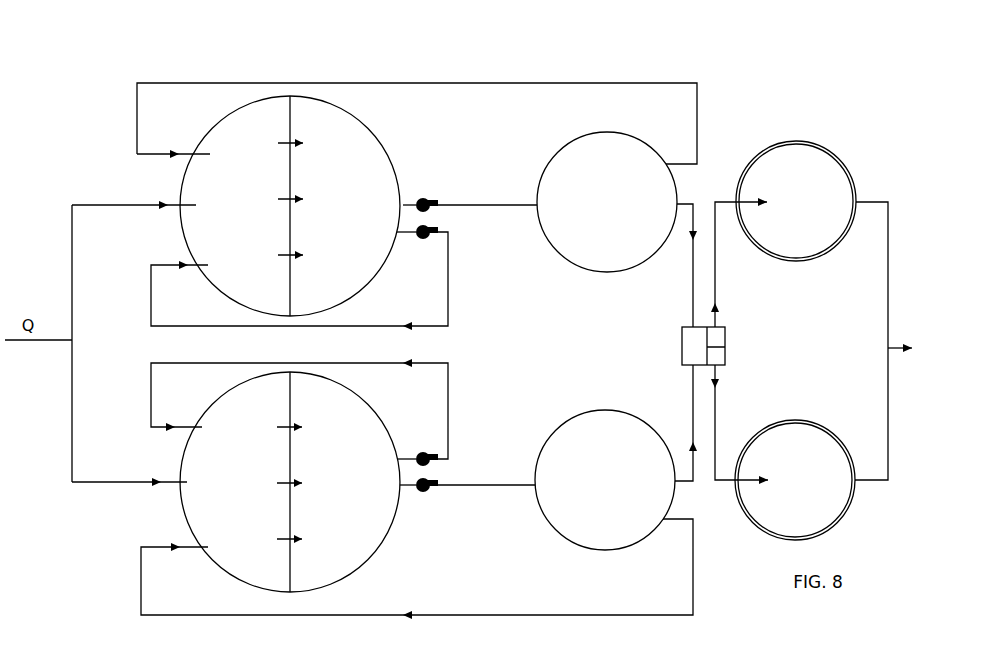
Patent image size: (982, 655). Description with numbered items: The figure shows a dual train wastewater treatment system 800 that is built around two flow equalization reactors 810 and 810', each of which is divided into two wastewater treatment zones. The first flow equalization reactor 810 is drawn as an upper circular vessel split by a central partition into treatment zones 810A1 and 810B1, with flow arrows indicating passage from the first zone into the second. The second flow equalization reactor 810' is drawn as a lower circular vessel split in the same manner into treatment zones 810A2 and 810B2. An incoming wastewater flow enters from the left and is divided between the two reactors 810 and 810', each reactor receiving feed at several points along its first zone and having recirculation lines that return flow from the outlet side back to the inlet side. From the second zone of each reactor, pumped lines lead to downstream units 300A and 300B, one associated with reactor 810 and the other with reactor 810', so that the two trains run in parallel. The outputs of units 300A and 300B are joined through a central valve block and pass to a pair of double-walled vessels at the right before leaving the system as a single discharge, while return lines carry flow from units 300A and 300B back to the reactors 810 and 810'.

The dual train wastewater treatment system 800 is at (373, 76).
The flow equalization reactor 810 is at (344, 213).
The flow equalization reactor 810' is at (417, 489).
The treatment zone 810A1 is at (235, 206).
The treatment zone 810B1 is at (345, 206).
The treatment zone 810A2 is at (235, 482).
The treatment zone 810B2 is at (345, 482).
The first processing unit 300A is at (607, 202).
The second processing unit 300B is at (605, 480).